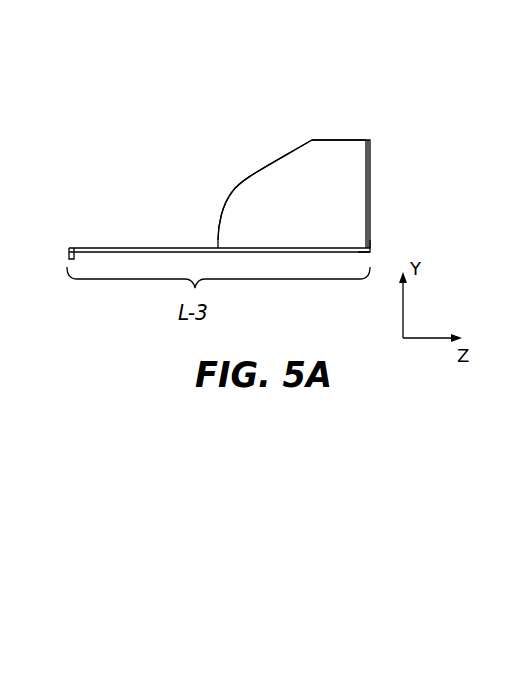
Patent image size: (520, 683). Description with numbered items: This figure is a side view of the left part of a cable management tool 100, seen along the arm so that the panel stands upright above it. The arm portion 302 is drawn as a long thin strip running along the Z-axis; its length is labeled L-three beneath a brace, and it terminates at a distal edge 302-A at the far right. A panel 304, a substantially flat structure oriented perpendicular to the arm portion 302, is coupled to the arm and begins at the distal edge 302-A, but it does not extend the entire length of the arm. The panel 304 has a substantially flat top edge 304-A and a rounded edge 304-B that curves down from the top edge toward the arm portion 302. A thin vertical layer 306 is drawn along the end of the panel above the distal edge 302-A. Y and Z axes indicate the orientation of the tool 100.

The sensor assembly 100 is at (152, 97).
The arm portion 302 is at (120, 246).
The distal edge 302-A is at (381, 240).
The panel 304 is at (340, 158).
The top edge 304-A is at (318, 139).
The rounded edge 304-B is at (235, 187).
The vertical strip layer 306 is at (370, 180).